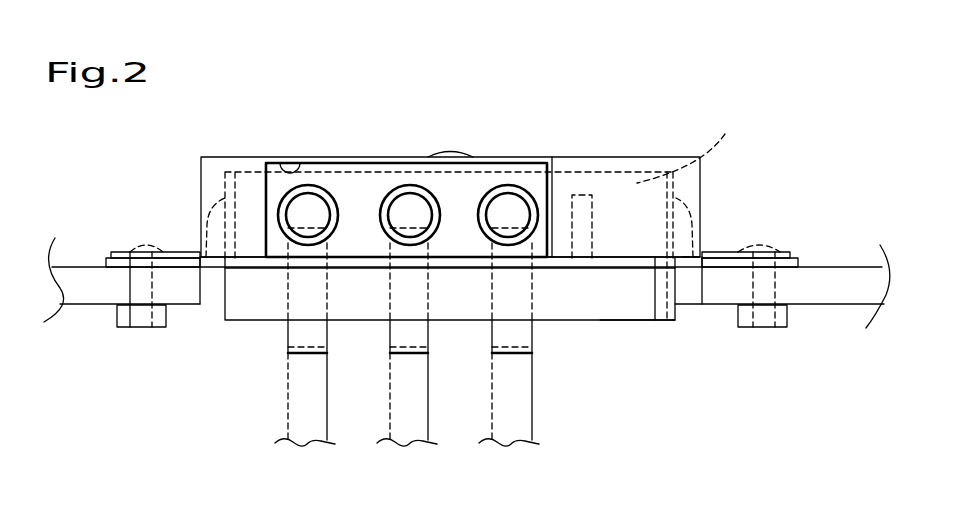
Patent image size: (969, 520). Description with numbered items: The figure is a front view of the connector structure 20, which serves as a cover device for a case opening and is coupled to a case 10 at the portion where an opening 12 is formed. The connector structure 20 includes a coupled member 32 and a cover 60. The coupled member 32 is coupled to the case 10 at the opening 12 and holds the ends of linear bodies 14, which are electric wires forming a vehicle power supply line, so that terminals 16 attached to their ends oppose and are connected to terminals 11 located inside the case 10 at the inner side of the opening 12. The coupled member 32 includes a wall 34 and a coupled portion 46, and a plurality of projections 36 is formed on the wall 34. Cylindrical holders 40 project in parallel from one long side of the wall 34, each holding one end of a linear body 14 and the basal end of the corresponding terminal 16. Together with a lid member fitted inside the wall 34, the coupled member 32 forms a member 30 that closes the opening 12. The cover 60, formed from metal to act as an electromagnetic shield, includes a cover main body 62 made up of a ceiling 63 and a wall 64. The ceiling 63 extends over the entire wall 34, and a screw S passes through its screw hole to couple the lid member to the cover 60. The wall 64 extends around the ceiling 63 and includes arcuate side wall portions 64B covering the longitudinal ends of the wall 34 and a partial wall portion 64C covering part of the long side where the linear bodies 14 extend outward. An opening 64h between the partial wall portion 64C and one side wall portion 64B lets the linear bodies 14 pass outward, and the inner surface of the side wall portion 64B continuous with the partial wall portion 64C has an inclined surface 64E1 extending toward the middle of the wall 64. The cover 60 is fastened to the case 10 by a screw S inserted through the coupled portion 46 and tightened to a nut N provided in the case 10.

The case 10 is at (858, 256).
The terminals 11 is at (327, 407).
The opening 12 is at (701, 292).
The linear bodies 14 is at (309, 192).
The terminals 16 is at (327, 332).
The connector structure 20 is at (447, 276).
The member 30 is at (451, 353).
The coupled member 32 is at (635, 353).
The wall 34 is at (612, 322).
The projections 36 is at (200, 200).
The holders 40 is at (382, 190).
The coupled portion 46 is at (655, 270).
The cover 60 is at (447, 187).
The cover main body 62 is at (655, 157).
The ceiling 63 is at (557, 157).
The wall 64 is at (452, 205).
The side wall portions 64B is at (200, 216).
The partial wall portion 64C is at (618, 236).
The inclined surface 64E1 is at (702, 145).
The opening 64h is at (283, 164).
The nut N is at (117, 318).
The screw S is at (132, 243).